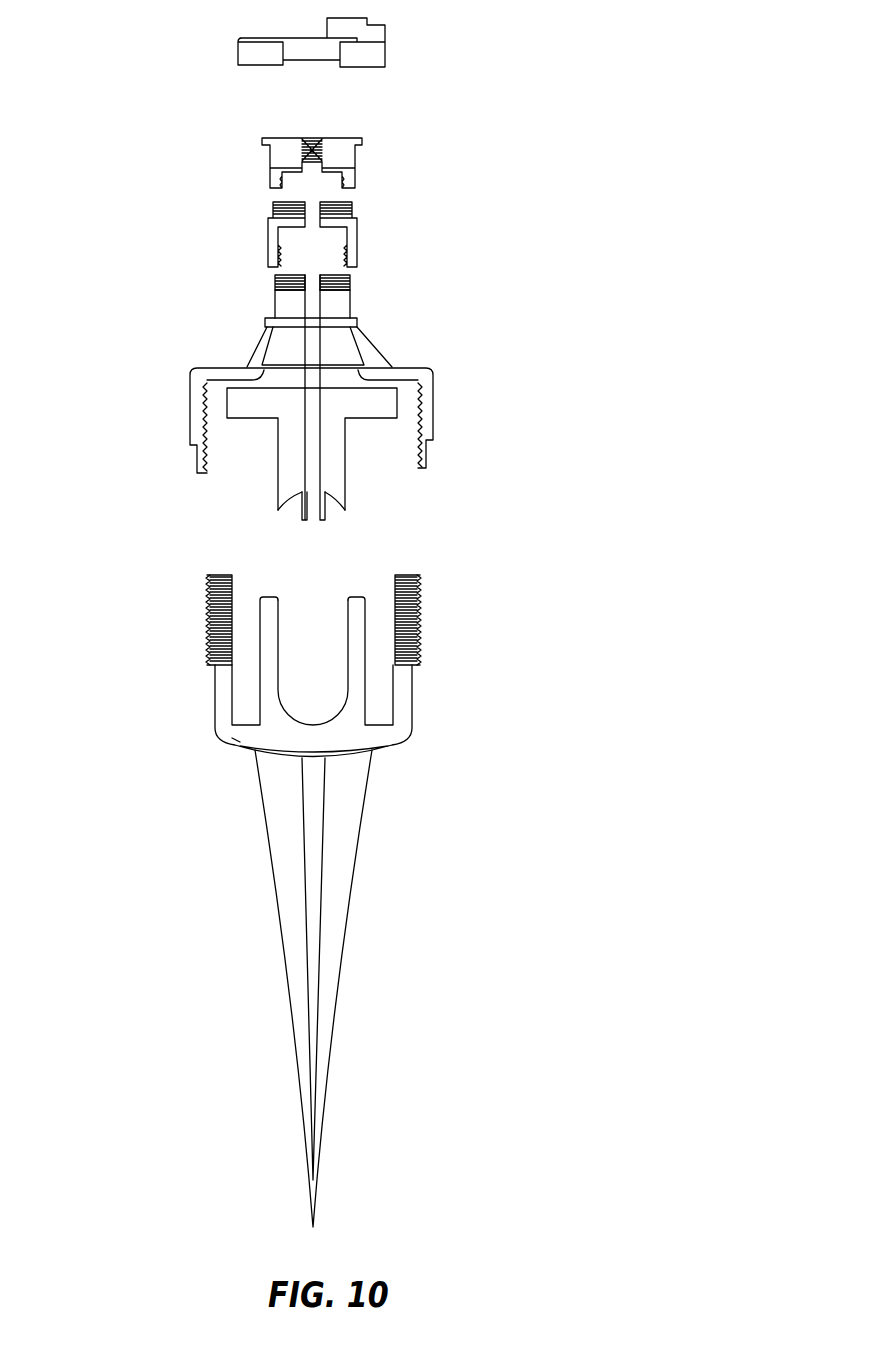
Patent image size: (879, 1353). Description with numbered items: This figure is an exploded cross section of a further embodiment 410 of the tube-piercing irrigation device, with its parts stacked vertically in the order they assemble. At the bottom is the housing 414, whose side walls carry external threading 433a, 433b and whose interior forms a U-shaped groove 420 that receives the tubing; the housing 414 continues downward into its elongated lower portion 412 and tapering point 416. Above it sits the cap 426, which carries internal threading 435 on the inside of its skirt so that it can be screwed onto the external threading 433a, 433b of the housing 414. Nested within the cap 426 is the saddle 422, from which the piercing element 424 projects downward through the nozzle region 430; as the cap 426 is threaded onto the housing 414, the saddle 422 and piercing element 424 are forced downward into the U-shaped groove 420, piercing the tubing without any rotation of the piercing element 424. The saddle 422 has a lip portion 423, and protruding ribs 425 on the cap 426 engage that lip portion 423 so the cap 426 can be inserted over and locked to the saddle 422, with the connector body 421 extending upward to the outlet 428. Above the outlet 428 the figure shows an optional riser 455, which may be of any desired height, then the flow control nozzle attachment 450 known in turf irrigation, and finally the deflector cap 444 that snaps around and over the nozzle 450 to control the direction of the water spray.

The embodiment 410 is at (138, 534).
The deflector cap 444 is at (385, 30).
The flow control nozzle attachment 450 is at (358, 156).
The riser 455 is at (355, 236).
The outlet 428 is at (350, 283).
The connector body 421 is at (352, 303).
The lip portion 423 is at (268, 319).
The protruding ribs 425 is at (248, 352).
The cap 426 is at (417, 366).
The internal threading 435 is at (208, 442).
The saddle 422 is at (390, 422).
The nozzle outlet 430 is at (283, 503).
The piercing element 424 is at (323, 522).
The external threading 433a is at (205, 618).
The external threading 433b is at (420, 608).
The spike housing 412 is at (368, 760).
The U-shaped groove 420 is at (328, 722).
The housing 414 is at (236, 740).
The spike 416 is at (349, 889).